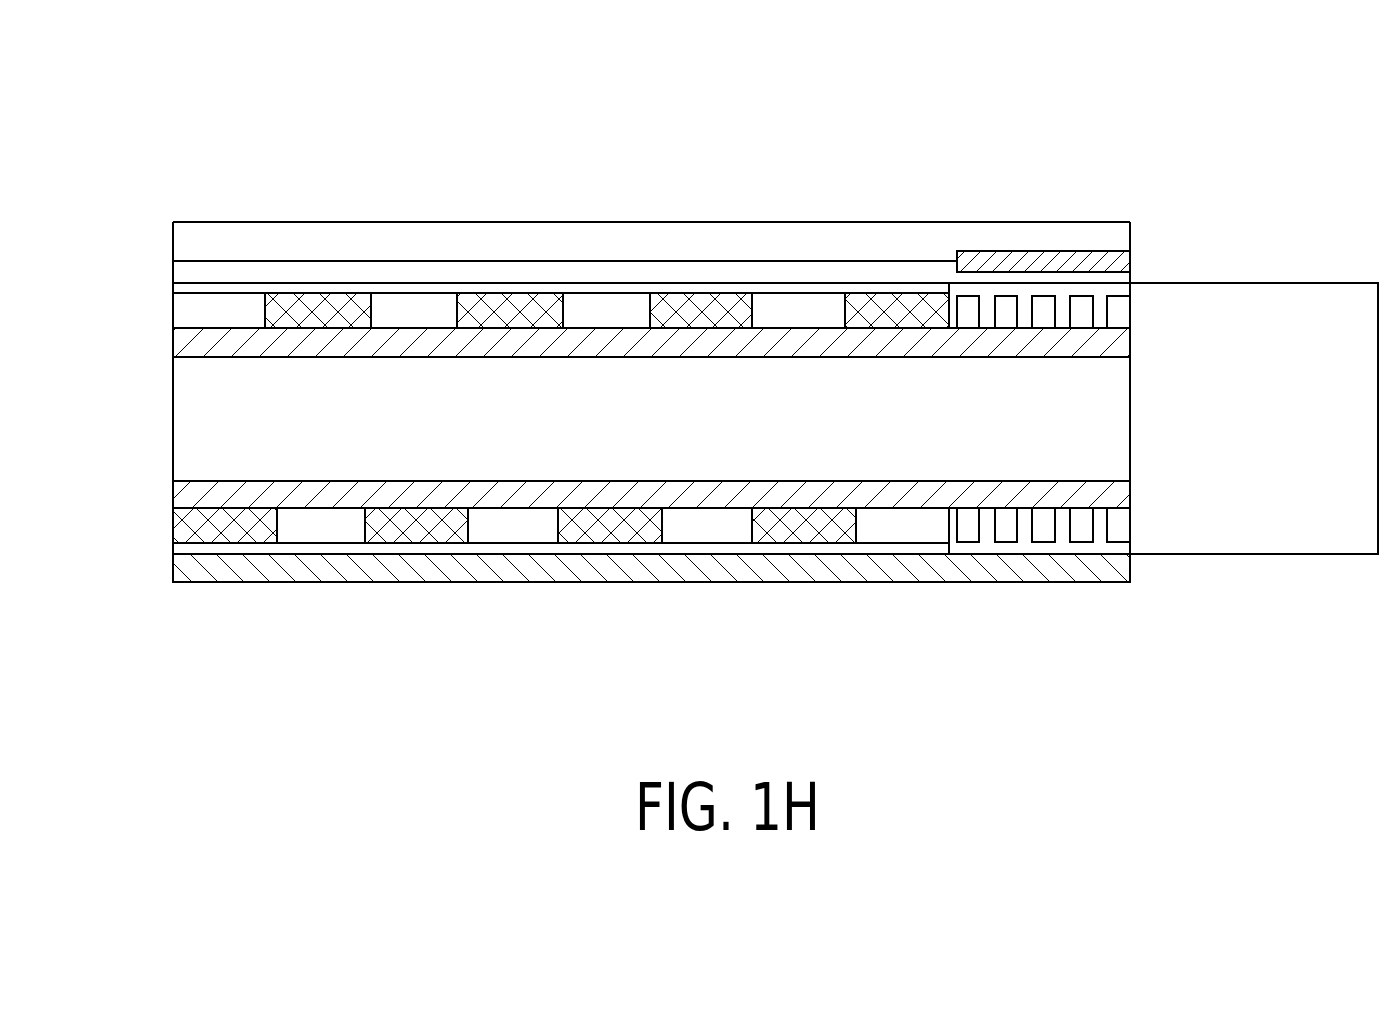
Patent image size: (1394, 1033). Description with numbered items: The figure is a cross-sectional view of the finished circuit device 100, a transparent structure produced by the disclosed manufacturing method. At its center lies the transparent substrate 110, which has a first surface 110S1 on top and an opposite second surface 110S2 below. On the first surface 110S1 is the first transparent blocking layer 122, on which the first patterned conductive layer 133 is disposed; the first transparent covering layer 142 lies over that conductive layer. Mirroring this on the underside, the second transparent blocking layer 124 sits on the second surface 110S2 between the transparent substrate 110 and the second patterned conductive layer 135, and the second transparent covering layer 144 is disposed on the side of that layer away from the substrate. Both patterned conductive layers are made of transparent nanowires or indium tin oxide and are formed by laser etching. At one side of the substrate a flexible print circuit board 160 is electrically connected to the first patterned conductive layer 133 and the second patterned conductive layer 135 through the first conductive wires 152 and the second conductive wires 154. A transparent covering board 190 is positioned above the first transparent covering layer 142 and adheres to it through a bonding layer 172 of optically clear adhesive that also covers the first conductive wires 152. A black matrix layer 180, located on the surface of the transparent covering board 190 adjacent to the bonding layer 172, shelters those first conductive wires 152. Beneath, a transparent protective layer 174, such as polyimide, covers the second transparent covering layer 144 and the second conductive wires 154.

The circuit device 100 is at (1252, 67).
The transparent substrate 110 is at (217, 413).
The first surface 110S1 is at (200, 355).
The second surface 110S2 is at (200, 483).
The first transparent blocking layer 122 is at (227, 340).
The second transparent blocking layer 124 is at (317, 493).
The first patterned conductive layer 133 is at (497, 300).
The second patterned conductive layer 135 is at (608, 530).
The first transparent covering layer 142 is at (885, 290).
The second transparent covering layer 144 is at (808, 547).
The first conductive wire 152 is at (1117, 307).
The second conductive wire 154 is at (1050, 525).
The flexible print circuit board 160 is at (1242, 302).
The bonding layer 172 is at (407, 270).
The transparent protective layer 174 is at (512, 568).
The black matrix layer 180 is at (1043, 258).
The transparent covering board 190 is at (603, 245).